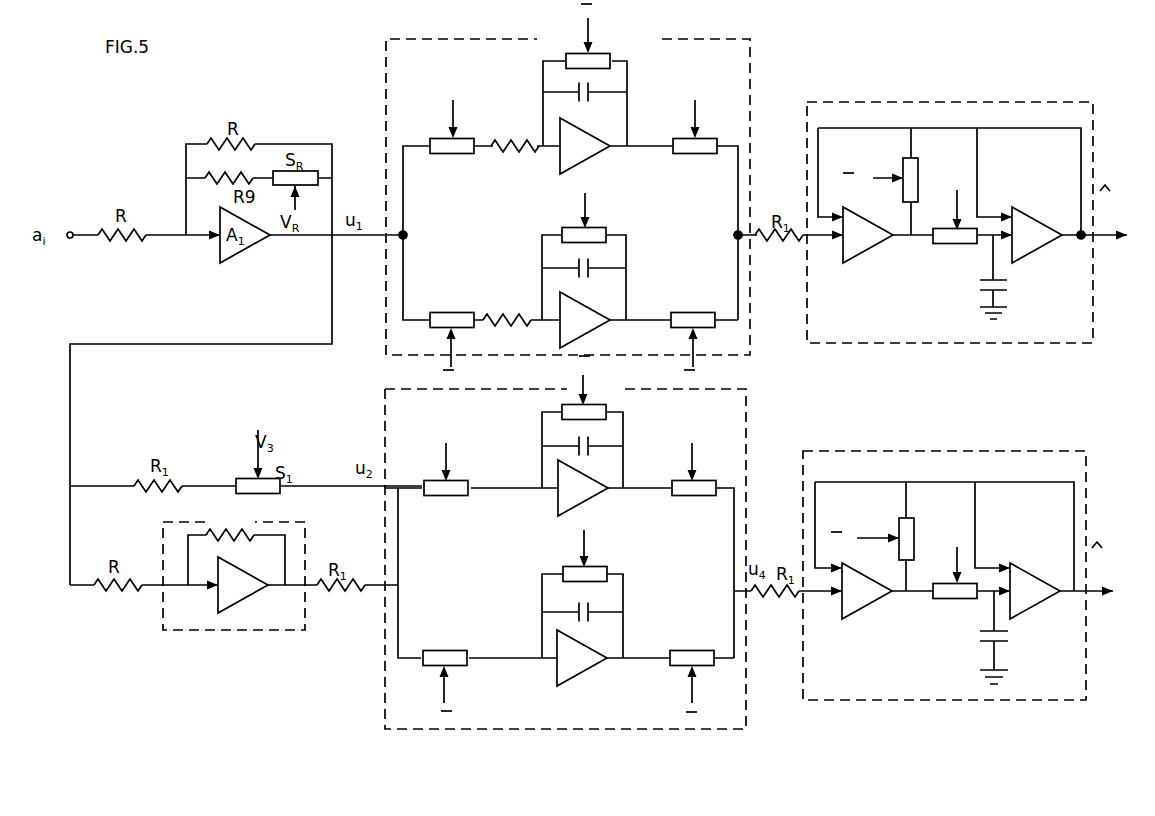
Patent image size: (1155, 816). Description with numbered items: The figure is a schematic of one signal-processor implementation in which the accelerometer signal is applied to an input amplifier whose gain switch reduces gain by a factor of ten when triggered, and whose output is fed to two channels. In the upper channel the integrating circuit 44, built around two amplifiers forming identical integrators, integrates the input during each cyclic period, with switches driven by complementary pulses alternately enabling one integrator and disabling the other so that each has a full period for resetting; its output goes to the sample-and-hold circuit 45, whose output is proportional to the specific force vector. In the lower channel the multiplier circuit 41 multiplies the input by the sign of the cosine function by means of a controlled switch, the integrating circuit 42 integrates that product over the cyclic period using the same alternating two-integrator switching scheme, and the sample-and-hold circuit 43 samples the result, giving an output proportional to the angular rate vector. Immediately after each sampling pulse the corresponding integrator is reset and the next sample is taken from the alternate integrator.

The multiplier circuit 41 is at (184, 650).
The integrating circuit 42 is at (378, 698).
The sample-and-hold circuit 43 is at (872, 711).
The integrating circuit 44 is at (378, 67).
The sample-and-hold circuit 45 is at (1010, 383).